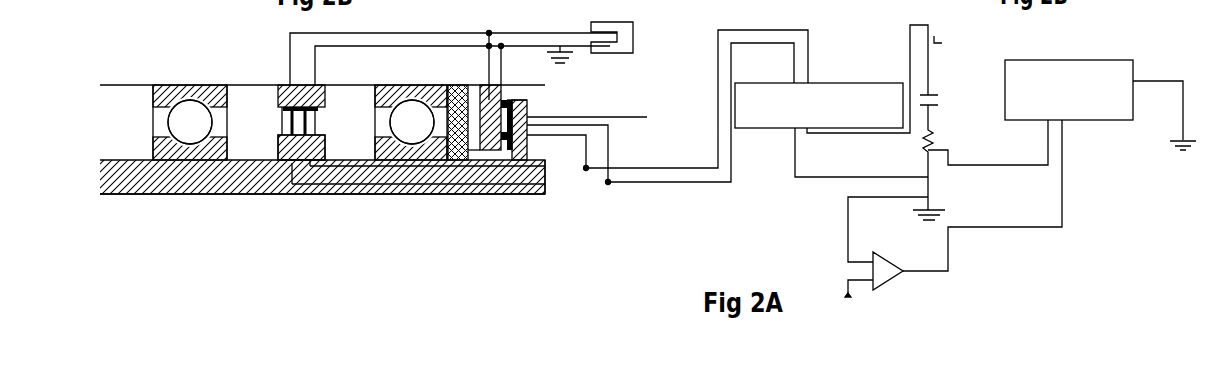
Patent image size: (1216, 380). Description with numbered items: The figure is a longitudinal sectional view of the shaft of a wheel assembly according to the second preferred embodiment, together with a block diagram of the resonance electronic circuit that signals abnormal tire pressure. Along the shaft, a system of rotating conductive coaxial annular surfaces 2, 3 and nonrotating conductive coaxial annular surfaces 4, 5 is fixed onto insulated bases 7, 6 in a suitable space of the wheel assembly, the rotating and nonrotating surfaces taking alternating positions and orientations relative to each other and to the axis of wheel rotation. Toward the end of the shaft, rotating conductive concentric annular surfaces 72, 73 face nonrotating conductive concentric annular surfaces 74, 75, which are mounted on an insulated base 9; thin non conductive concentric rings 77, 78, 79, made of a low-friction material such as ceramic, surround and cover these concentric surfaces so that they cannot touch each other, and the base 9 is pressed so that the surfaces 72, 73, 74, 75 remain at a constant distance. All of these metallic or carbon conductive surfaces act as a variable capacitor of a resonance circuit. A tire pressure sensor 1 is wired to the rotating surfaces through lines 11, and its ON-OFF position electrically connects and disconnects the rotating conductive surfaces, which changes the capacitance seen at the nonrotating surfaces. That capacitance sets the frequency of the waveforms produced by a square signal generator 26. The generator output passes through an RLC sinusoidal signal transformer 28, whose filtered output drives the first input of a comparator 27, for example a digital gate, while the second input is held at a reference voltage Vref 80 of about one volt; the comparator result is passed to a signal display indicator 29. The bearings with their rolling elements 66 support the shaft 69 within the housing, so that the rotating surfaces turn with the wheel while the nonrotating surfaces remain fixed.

The tire pressure sensor 1 is at (622, 22).
The rotating conductive annular surface 2 is at (312, 130).
The rotating conductive annular surface 3 is at (282, 110).
The nonrotating conductive annular surface 4 is at (322, 132).
The nonrotating conductive annular surface 5 is at (285, 136).
The insulated base 6 is at (272, 168).
The insulated base 7 is at (290, 84).
The insulated base 9 is at (522, 160).
The wires 11 is at (557, 33).
The square signal generator 26 is at (830, 83).
The comparator 27 is at (907, 274).
The RLC of sinusoidal signal transformer 28 is at (957, 133).
The signal display indicator 29 is at (1086, 60).
The rolling elements 66 is at (417, 130).
The shaft 69 is at (150, 185).
The rotating conductive concentric annular surface 72 is at (460, 158).
The rotating conductive concentric annular surface 73 is at (485, 152).
The nonrotating conductive concentric annular surface 74 is at (527, 113).
The nonrotating conductive concentric annular surface 75 is at (543, 167).
The non conductive concentric ring 77 is at (527, 102).
The non conductive concentric ring 78 is at (601, 124).
The non conductive concentric ring 79 is at (511, 152).
The reference voltage Vref 80 is at (846, 294).